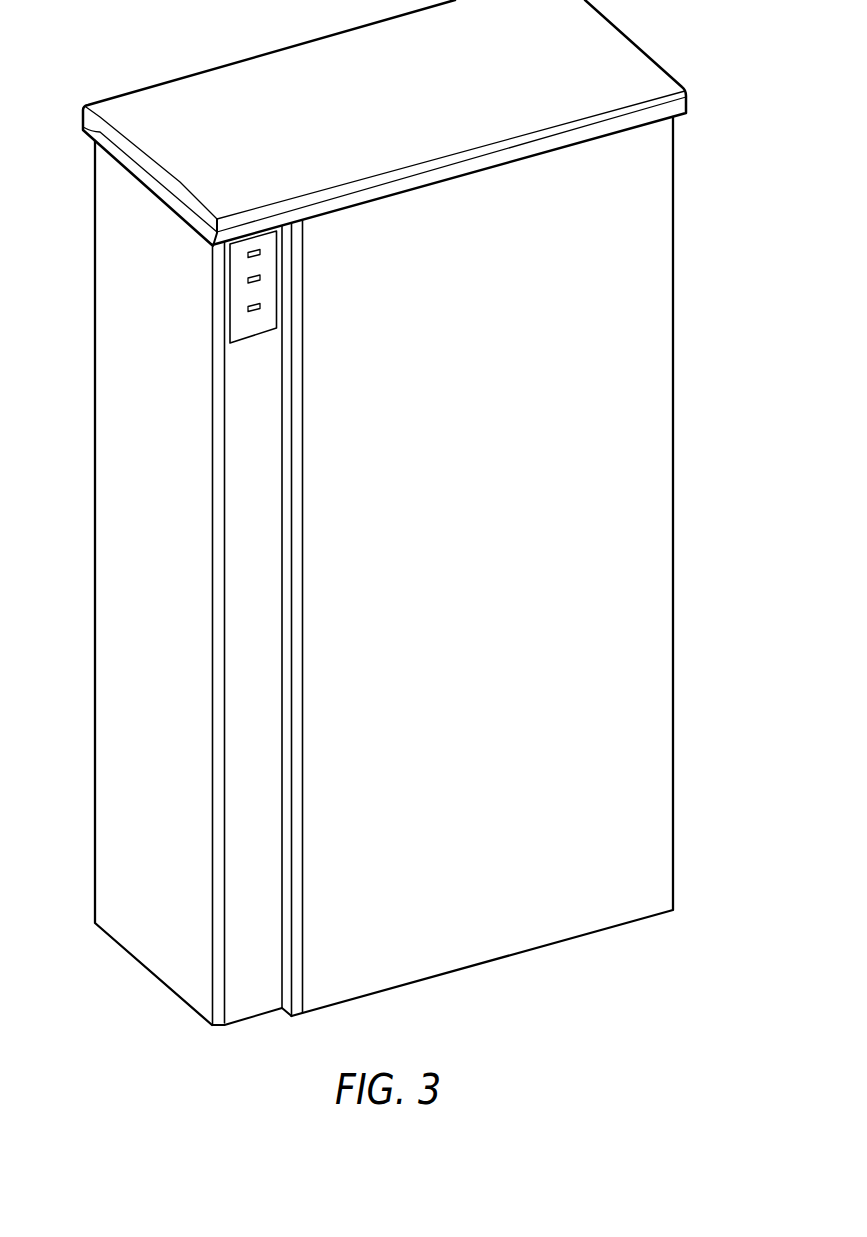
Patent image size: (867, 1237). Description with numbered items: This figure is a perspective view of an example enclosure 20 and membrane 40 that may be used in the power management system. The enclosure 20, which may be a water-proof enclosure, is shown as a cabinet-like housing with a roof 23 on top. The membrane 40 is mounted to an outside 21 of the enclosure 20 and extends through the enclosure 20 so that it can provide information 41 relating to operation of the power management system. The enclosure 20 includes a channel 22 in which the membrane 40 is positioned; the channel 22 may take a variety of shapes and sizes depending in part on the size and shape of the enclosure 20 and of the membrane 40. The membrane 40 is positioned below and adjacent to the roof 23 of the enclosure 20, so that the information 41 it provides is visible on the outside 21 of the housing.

The enclosure 20 is at (690, 225).
The outside 21 is at (132, 513).
The channel 22 is at (248, 615).
The roof 23 is at (262, 67).
The membrane 40 is at (243, 322).
The information 41 is at (262, 241).